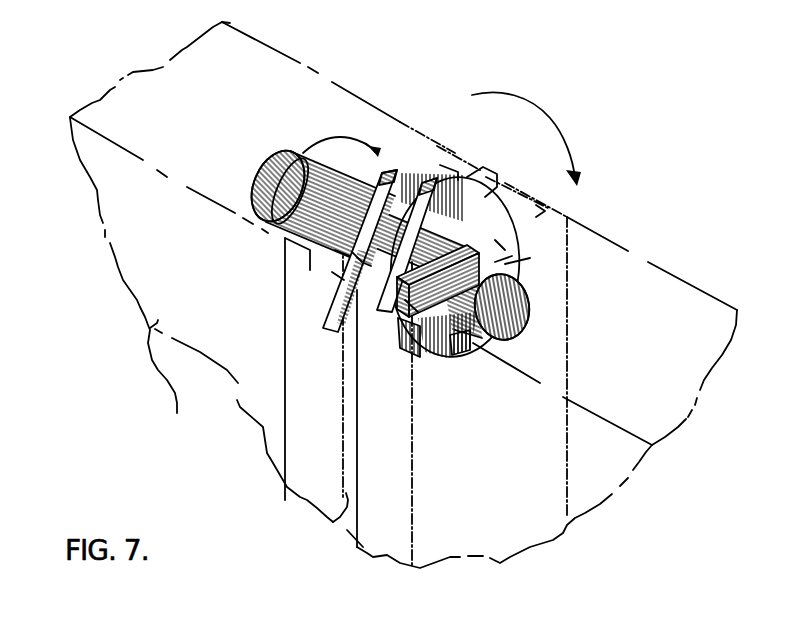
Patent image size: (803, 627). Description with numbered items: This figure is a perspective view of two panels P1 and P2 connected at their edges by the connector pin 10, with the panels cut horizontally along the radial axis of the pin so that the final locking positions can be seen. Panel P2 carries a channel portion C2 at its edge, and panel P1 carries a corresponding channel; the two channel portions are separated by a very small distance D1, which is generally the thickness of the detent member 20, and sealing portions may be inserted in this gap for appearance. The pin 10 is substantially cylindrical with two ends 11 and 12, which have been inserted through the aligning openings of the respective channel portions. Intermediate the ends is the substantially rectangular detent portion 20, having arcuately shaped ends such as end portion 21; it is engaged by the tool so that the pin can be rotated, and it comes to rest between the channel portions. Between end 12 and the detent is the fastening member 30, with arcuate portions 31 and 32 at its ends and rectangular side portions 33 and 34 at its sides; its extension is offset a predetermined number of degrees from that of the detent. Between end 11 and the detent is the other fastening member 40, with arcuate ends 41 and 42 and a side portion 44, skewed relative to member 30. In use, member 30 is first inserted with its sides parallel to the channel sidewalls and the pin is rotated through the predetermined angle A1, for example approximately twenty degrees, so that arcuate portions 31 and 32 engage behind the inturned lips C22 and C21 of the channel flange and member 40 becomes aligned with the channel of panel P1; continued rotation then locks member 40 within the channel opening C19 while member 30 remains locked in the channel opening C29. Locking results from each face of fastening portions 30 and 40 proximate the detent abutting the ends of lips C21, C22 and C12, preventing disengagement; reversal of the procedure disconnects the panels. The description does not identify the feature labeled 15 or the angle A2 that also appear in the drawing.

The connector pin 10 is at (213, 187).
The pin end 11 is at (493, 332).
The pin end 12 is at (257, 180).
The pin head ring 15 is at (280, 226).
The detent portion 20 is at (478, 190).
The end portion of detent portion 21 is at (468, 168).
The fastening member 30 is at (428, 333).
The arcuate portion 31 is at (518, 268).
The arcuate portion 32 is at (390, 333).
The side portion 33 is at (458, 338).
The side portion 34 is at (503, 262).
The fastening member 40 is at (458, 172).
The arcuate end 41 is at (393, 168).
The arcuate end 42 is at (338, 277).
The side portion 44 is at (381, 172).
The predetermined rotation angle A1 is at (342, 134).
The rotation direction A2 is at (526, 135).
The channel portion C2 is at (377, 510).
The inturned lip C12 is at (357, 256).
The channel opening C19 is at (340, 253).
The inturned lip C21 is at (477, 220).
The inturned lip C22 is at (412, 307).
The channel opening C29 is at (498, 245).
The separation distance D1 is at (330, 527).
The panel P1 is at (132, 280).
The panel P2 is at (597, 443).